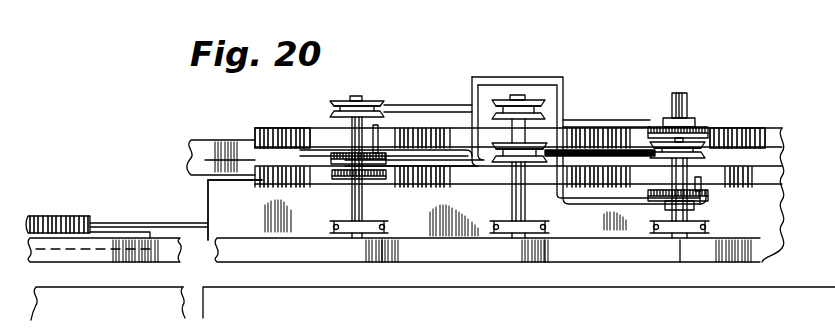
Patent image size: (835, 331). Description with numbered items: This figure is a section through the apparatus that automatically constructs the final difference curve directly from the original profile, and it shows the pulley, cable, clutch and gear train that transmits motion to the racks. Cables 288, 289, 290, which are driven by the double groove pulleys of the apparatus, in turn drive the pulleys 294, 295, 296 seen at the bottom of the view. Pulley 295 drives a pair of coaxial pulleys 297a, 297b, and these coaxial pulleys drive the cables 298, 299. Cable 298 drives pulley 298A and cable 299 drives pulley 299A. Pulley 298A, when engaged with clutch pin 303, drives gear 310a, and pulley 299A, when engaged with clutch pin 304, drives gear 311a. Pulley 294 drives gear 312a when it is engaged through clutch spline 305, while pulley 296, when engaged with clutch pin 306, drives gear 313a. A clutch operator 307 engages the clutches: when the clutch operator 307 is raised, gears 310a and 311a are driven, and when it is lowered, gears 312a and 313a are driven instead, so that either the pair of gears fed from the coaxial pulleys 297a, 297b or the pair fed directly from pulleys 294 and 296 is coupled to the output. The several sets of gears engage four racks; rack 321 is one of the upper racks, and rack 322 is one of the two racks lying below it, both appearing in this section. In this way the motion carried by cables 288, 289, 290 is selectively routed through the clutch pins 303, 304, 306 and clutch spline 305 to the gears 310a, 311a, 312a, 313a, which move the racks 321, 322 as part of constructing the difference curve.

The drive cable 288 is at (333, 229).
The drive cable 289 is at (494, 230).
The drive cable 290 is at (656, 230).
The pulley 294 is at (677, 240).
The pulley 295 is at (543, 240).
The pulley 296 is at (372, 240).
The coaxial pulley 297a is at (537, 100).
The coaxial pulley 297b is at (540, 147).
The cable 298 is at (440, 105).
The pulley 298A is at (352, 97).
The cable 299 is at (637, 140).
The pulley 299A is at (720, 148).
The clutch pin 303 is at (395, 130).
The clutch pin 304 is at (703, 182).
The clutch spline 305 is at (672, 95).
The clutch pin 306 is at (338, 200).
The clutch operator 307 is at (492, 78).
The gear 310a is at (335, 158).
The gear 311a is at (708, 200).
The gear 312a is at (705, 127).
The gear 313a is at (372, 176).
The rack 321 is at (268, 128).
The rack 322 is at (290, 192).